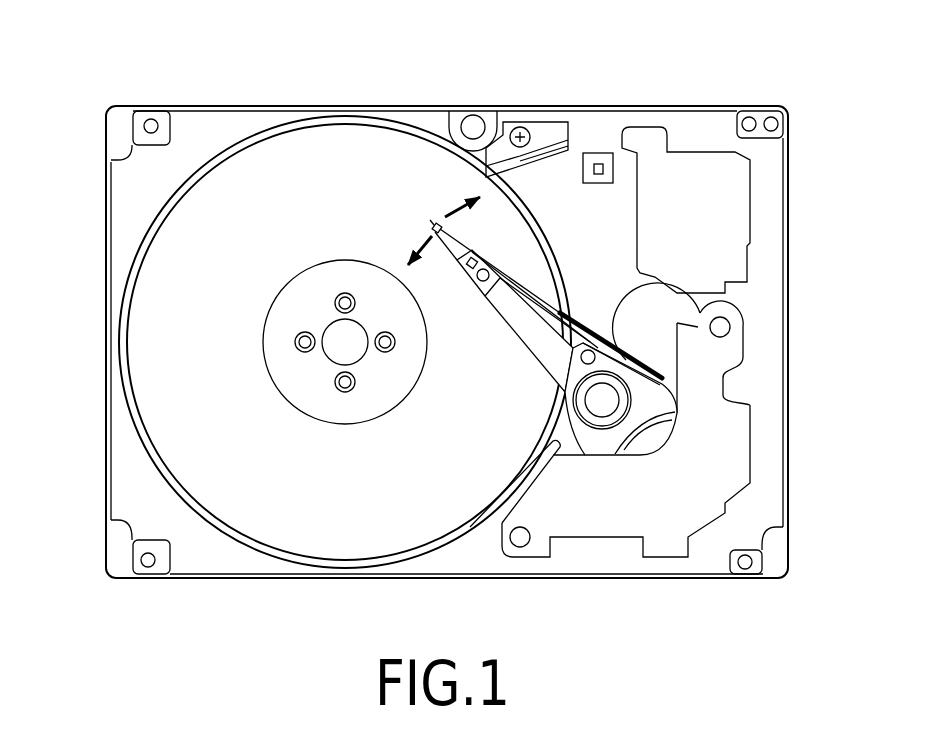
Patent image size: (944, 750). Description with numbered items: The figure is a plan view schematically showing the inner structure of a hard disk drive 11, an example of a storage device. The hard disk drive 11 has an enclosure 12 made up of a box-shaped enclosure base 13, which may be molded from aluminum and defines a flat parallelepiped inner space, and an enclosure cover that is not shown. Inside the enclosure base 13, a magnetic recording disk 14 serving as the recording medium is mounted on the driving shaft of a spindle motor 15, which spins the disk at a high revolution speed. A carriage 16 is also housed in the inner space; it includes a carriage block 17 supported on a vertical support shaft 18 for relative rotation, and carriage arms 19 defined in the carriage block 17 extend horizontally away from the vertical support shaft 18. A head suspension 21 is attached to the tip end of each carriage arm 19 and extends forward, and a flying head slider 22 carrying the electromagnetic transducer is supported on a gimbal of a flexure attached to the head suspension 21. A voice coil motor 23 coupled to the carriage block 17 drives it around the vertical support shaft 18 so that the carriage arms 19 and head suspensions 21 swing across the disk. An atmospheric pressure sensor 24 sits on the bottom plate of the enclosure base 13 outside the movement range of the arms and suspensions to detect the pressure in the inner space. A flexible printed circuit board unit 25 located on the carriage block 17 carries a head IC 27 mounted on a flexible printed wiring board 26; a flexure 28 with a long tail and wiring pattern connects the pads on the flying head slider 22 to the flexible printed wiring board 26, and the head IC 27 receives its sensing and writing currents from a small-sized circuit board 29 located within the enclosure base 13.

The hard disk drive 11 is at (163, 73).
The enclosure 12 is at (453, 102).
The enclosure base 13 is at (108, 235).
The magnetic recording disk 14 is at (182, 193).
The spindle motor 15 is at (335, 358).
The carriage 16 is at (542, 348).
The carriage block 17 is at (570, 425).
The vertical support shaft 18 is at (600, 430).
The carriage arm 19 is at (508, 330).
The head suspension 21 is at (458, 236).
The flying head slider 22 is at (438, 238).
The voice coil motor 23 is at (654, 429).
The atmospheric pressure sensor 24 is at (602, 150).
The flexible printed circuit board unit 25 is at (610, 345).
The flexible printed wiring board 26 is at (647, 293).
The head IC 27 is at (662, 350).
The flexure 28 is at (533, 292).
The circuit board 29 is at (637, 230).